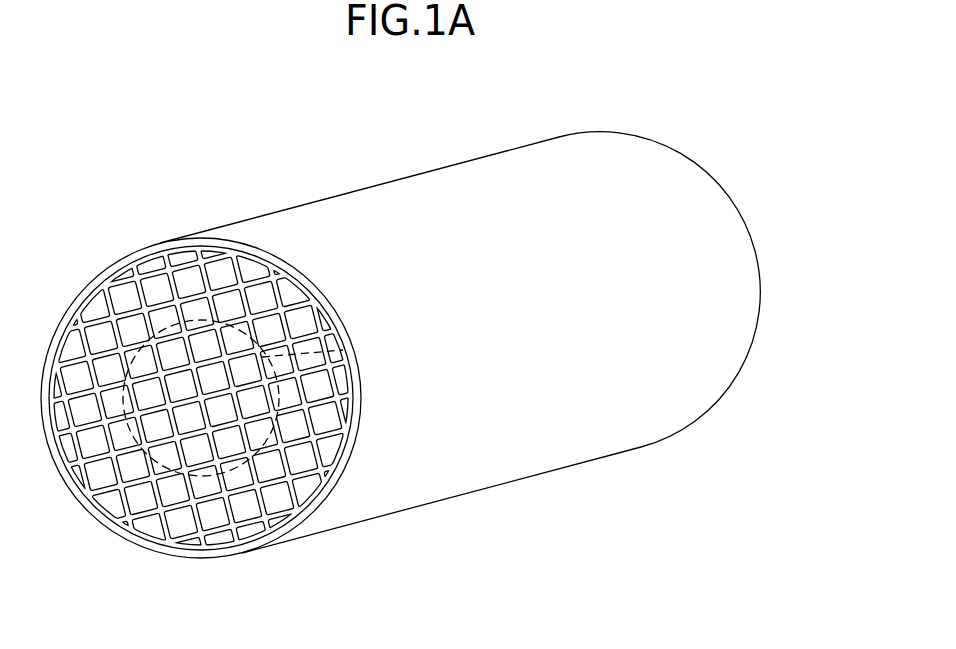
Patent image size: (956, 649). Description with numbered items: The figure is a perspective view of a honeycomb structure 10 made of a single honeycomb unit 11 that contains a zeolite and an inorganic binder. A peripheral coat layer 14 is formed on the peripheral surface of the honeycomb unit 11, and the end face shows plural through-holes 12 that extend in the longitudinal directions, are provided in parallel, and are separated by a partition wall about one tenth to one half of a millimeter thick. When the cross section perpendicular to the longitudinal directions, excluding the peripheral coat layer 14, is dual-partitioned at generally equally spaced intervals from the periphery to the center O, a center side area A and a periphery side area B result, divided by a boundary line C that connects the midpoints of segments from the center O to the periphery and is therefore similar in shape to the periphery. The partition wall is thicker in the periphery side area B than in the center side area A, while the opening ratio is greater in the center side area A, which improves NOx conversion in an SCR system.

The honeycomb structure 10 is at (311, 193).
The honeycomb unit 11 is at (290, 512).
The through-holes 12 is at (190, 497).
The peripheral coat layer 14 is at (98, 283).
The center side area A is at (176, 348).
The periphery side area B is at (314, 386).
The boundary line C is at (349, 343).
The center O is at (216, 382).